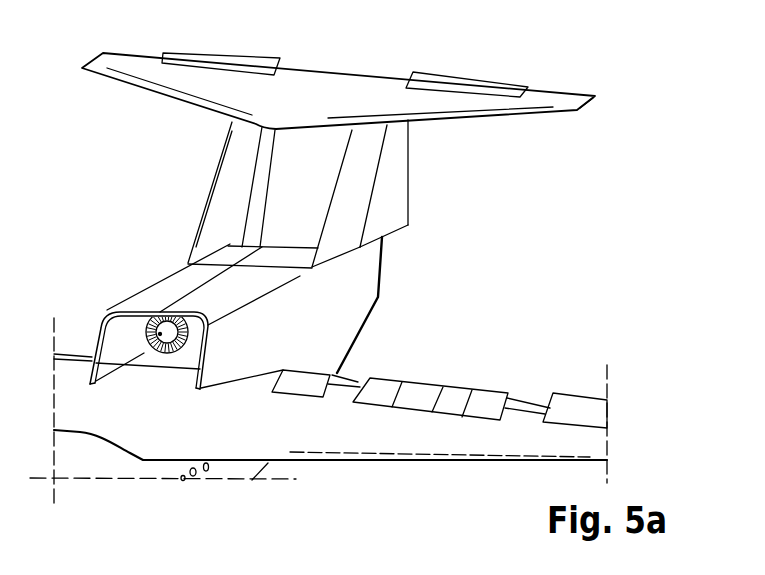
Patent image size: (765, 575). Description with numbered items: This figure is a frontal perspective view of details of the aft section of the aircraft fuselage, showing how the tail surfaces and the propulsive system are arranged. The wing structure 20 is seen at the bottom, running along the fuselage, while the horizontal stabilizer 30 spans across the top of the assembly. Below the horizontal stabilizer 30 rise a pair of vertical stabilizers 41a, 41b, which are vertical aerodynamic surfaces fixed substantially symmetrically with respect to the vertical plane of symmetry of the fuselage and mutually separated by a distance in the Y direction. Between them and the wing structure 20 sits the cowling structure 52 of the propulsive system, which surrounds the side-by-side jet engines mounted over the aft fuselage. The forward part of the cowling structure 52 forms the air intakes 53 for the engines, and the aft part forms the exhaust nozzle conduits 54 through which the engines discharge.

The wing structure 20 is at (381, 473).
The horizontal stabilizer 30 is at (471, 56).
The vertical stabilizer 41a is at (230, 182).
The vertical stabilizer 41b is at (361, 181).
The cowling structure 52 is at (151, 286).
The air intakes 53 is at (125, 339).
The exhaust nozzle conduits 54 is at (287, 267).